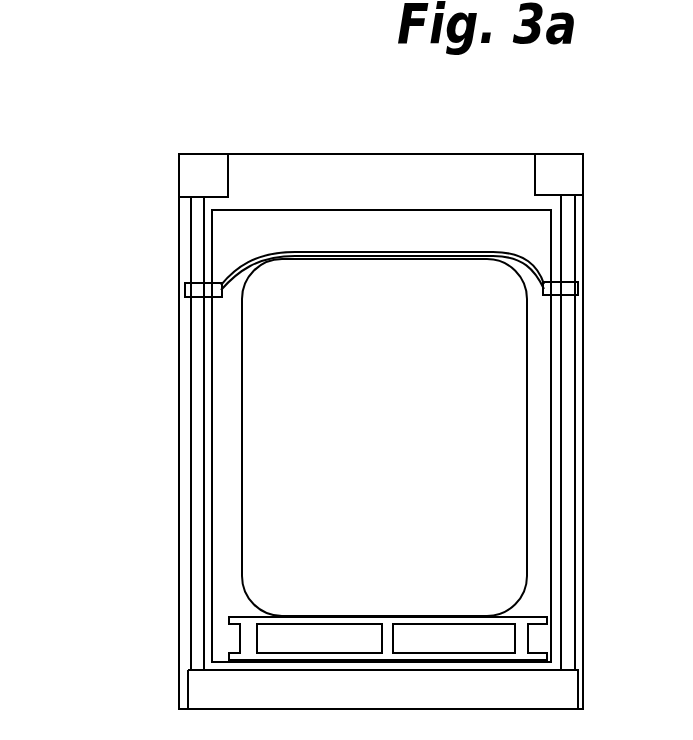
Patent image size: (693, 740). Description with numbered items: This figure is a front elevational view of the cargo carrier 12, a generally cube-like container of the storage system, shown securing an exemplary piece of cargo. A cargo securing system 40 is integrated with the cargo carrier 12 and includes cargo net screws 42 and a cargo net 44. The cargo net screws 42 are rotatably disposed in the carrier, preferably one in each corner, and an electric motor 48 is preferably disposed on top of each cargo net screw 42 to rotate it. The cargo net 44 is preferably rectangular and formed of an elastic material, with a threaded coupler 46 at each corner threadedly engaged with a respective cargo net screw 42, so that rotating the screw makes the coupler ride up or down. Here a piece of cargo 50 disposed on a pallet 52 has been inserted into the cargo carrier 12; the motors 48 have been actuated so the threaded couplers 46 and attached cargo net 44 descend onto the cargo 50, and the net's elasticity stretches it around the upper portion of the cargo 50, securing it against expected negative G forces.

The cargo carrier 12 is at (260, 124).
The cargo securing system 40 is at (186, 233).
The cargo net screws 42 is at (192, 390).
The cargo net 44 is at (415, 250).
The threaded coupler 46 is at (193, 288).
The electric motor 48 is at (203, 173).
The cargo 50 is at (265, 513).
The pallet 52 is at (242, 617).